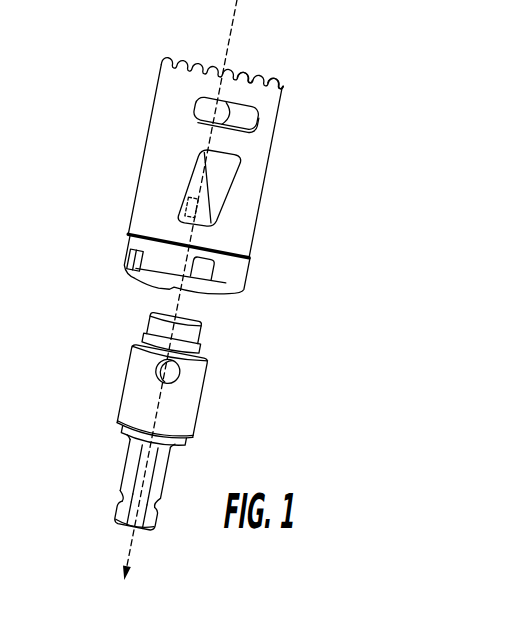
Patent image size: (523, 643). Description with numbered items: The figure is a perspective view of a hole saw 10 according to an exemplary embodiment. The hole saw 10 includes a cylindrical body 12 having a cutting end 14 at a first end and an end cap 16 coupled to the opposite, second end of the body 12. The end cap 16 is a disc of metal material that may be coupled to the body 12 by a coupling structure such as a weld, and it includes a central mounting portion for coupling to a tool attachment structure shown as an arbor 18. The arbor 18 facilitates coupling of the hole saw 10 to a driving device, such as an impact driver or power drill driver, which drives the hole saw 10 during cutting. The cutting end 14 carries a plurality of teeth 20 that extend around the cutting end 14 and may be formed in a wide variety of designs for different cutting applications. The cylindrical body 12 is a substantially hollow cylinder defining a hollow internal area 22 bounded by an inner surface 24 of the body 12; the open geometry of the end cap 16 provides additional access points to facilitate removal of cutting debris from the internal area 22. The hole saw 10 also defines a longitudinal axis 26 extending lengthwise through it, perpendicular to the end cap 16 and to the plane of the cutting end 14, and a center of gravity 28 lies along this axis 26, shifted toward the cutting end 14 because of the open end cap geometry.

The hole saw 10 is at (383, 148).
The cylindrical body 12 is at (255, 161).
The cutting end 14 is at (140, 65).
The end cap 16 is at (133, 262).
The arbor 18 is at (123, 388).
The teeth 20 is at (282, 84).
The hollow internal area 22 is at (253, 59).
The inner surface 24 is at (233, 174).
The longitudinal axis 26 is at (233, 12).
The center of gravity 28 is at (184, 210).